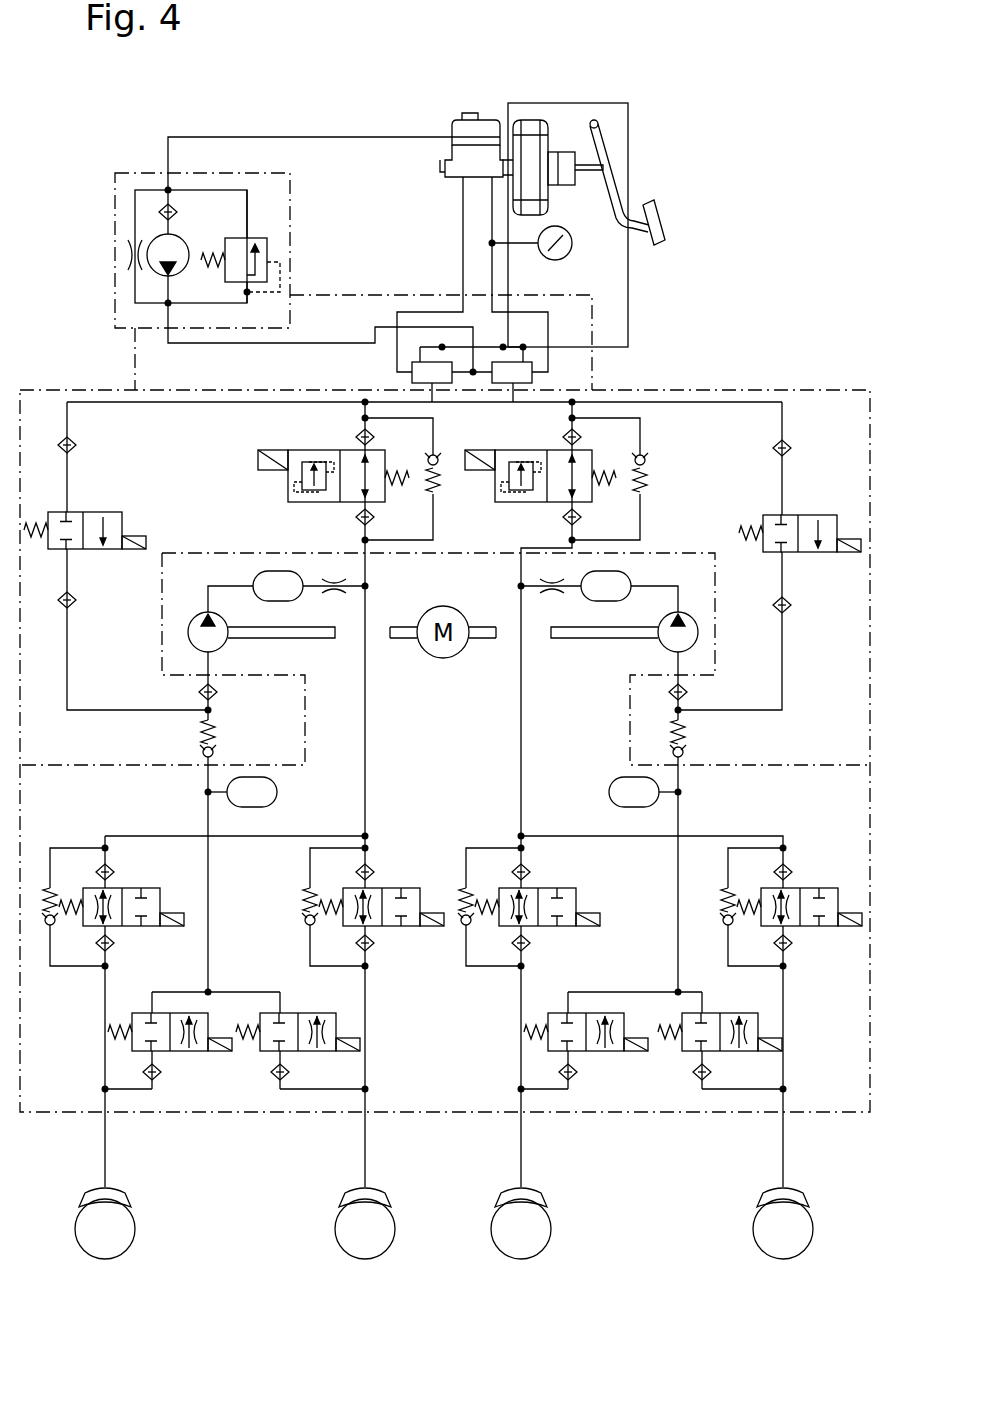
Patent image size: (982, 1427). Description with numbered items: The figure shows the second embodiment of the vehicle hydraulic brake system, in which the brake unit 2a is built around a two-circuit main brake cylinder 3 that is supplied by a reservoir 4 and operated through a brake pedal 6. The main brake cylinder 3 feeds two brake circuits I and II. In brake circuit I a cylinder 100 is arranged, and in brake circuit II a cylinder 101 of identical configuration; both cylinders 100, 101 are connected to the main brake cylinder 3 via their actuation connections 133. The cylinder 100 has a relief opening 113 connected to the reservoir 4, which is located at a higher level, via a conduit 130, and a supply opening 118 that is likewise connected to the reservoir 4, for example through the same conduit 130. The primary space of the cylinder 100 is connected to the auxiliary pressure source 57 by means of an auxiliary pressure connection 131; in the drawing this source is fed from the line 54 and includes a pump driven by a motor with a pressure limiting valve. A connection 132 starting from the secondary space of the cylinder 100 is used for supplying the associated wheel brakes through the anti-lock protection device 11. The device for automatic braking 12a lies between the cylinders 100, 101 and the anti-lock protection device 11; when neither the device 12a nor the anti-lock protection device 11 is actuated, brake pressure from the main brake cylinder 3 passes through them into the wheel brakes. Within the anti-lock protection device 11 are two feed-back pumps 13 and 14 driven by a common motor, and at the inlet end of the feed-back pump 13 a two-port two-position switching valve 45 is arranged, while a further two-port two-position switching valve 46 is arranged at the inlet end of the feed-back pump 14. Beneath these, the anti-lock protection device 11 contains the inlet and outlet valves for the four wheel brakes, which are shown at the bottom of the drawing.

The pressure supply line 54 is at (297, 137).
The reservoir 4 is at (452, 125).
The main brake cylinder 3 is at (447, 166).
The brake pedal 6 is at (656, 212).
The conduit 130 is at (628, 288).
The brake circuit II is at (463, 256).
The brake circuit I is at (493, 267).
The auxiliary pressure source 57 is at (123, 217).
The brake system unit 2a is at (110, 353).
The device for automatic braking 12a is at (311, 371).
The cylinder 101 is at (412, 379).
The cylinder 100 is at (532, 378).
The supply opening 118 is at (503, 345).
The relief opening 113 is at (523, 347).
The actuation connection 133 is at (535, 360).
The auxiliary pressure connection 131 is at (434, 383).
The connection 132 is at (513, 383).
The 2/2-way valve 46 is at (78, 512).
The 2/2-way valve 45 is at (795, 515).
The feed-back pump 14 is at (219, 643).
The feed-back pump 13 is at (665, 643).
The anti-lock protection device 11 is at (456, 1120).